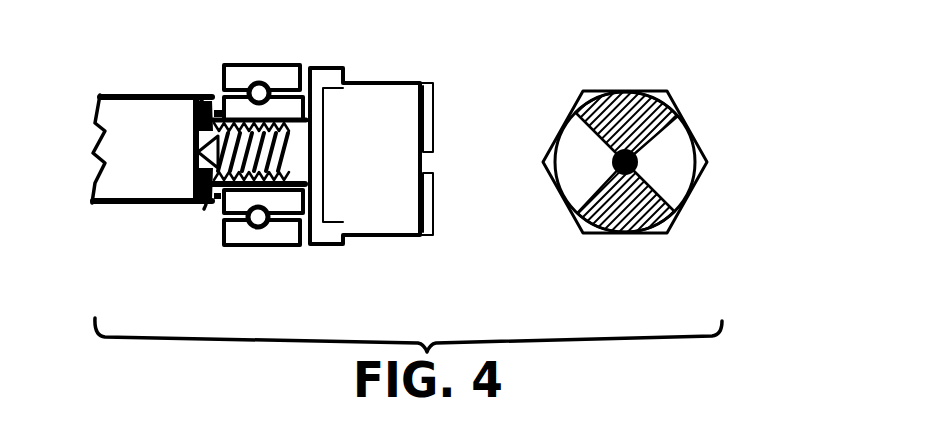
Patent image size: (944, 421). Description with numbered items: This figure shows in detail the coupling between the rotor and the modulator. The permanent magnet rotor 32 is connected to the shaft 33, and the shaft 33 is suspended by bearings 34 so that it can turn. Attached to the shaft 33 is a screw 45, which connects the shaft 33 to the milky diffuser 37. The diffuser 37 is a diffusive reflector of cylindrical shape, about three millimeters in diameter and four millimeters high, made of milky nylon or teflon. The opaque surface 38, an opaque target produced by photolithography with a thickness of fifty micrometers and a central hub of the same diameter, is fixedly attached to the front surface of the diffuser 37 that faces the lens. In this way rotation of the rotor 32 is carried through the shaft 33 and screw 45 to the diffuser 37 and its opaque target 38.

The permanent magnet rotor 32 is at (152, 188).
The shaft 33 is at (200, 192).
The bearings 34 is at (237, 73).
The milky diffuser 37 is at (367, 97).
The opaque surface 38 is at (432, 110).
The screw 45 is at (207, 97).